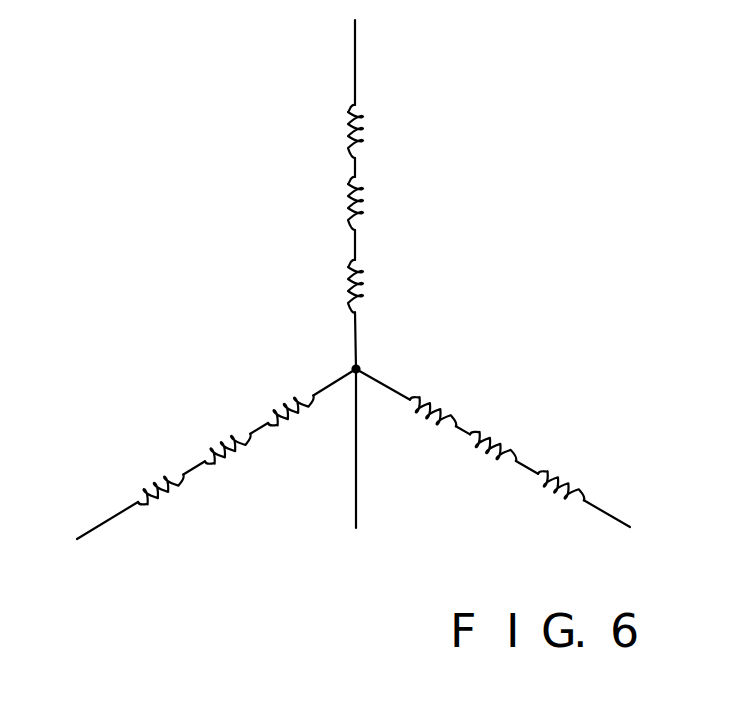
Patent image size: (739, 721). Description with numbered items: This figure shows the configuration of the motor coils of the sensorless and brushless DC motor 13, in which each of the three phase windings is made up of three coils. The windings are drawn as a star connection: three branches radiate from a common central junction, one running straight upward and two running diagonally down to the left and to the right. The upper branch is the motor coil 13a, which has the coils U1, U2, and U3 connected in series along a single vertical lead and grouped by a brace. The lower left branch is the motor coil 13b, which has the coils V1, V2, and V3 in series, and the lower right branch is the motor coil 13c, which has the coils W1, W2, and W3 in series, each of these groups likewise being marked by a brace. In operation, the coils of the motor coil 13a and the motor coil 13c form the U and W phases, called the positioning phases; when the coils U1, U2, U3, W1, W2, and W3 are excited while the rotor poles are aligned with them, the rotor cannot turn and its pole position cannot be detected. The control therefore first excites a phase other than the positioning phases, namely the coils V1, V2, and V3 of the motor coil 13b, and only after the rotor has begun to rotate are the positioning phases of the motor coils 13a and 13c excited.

The sensorless and brushless DC motor 13 is at (353, 286).
The motor coil 13a is at (352, 209).
The motor coil 13b is at (220, 459).
The motor coil 13c is at (483, 457).
The coil U1 is at (367, 137).
The coil U2 is at (368, 208).
The coil U3 is at (404, 286).
The coil V1 is at (168, 497).
The coil V2 is at (232, 462).
The coil V3 is at (290, 427).
The coil W1 is at (544, 492).
The coil W2 is at (482, 461).
The coil W3 is at (420, 419).